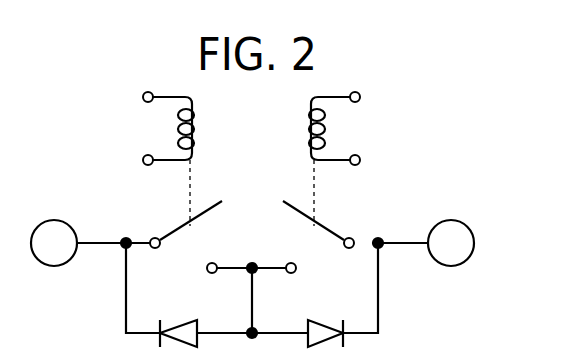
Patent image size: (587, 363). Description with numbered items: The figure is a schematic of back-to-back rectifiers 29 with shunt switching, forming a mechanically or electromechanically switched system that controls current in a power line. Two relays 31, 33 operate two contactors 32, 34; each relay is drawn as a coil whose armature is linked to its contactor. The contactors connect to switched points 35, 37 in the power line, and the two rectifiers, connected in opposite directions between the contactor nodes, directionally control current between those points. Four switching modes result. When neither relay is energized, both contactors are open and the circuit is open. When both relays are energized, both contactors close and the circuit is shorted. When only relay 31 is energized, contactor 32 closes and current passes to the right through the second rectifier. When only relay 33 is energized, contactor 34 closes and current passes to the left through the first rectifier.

The back-to-back rectifiers 29 is at (445, 85).
The relay 31 is at (112, 146).
The contactor 32 is at (187, 224).
The relay 33 is at (391, 146).
The contactor 34 is at (326, 232).
The switched point 35 is at (68, 265).
The switched point 37 is at (466, 266).